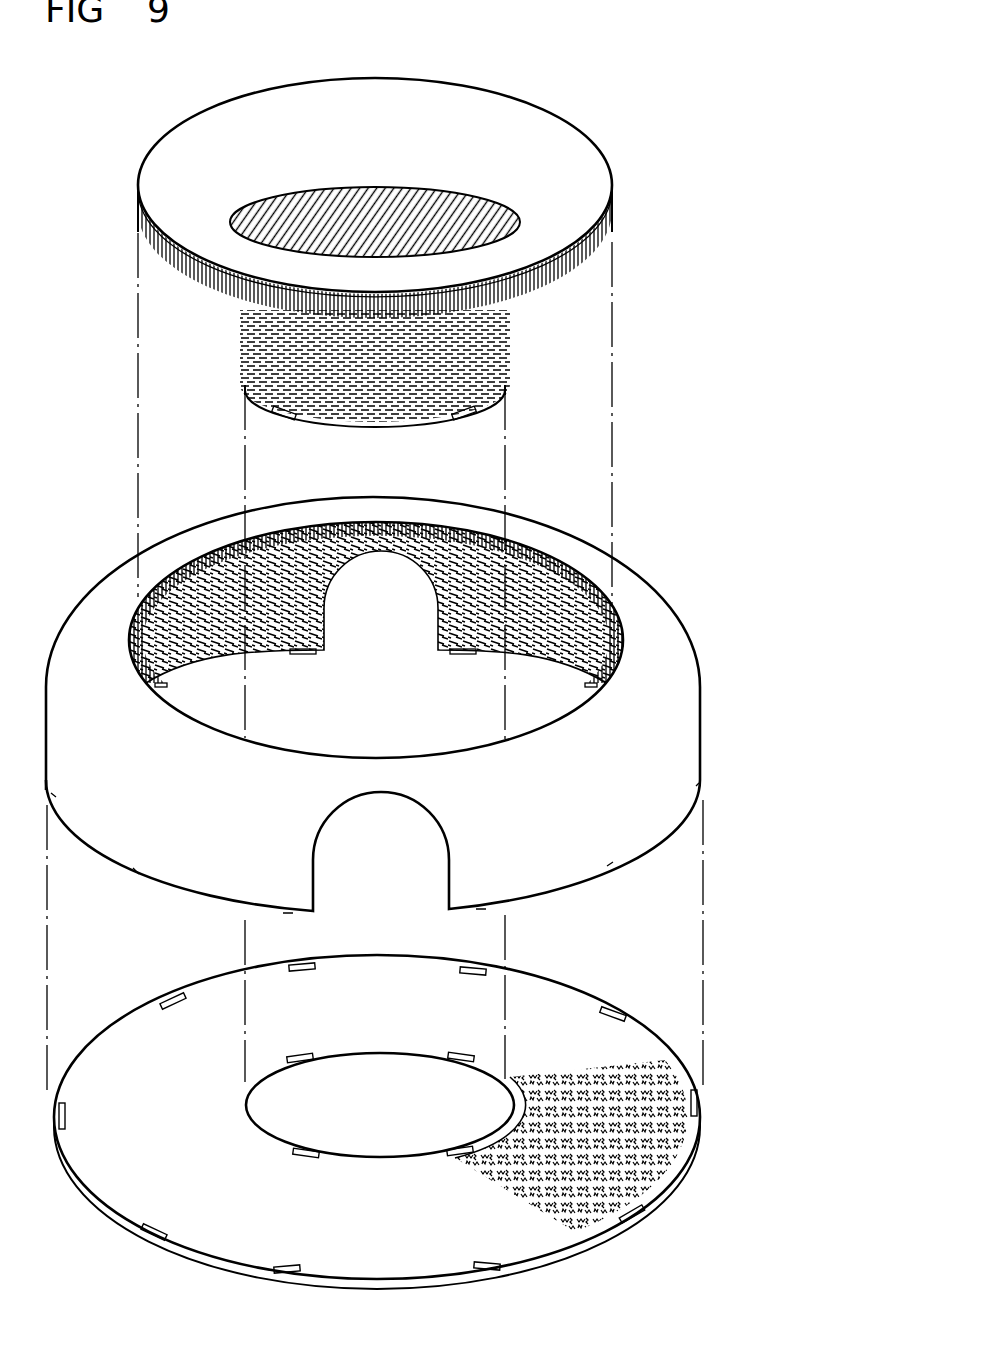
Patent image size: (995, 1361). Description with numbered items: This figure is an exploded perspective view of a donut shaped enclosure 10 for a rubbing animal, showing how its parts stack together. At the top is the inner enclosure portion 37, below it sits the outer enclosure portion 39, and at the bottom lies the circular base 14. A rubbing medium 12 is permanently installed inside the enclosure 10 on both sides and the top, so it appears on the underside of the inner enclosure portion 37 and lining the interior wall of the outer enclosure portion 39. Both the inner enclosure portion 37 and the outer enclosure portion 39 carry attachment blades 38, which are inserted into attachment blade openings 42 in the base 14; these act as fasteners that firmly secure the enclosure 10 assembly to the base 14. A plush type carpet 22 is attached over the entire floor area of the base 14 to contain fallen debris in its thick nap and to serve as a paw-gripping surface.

The enclosure 10 is at (568, 47).
The inner enclosure portion 37 is at (552, 119).
The rubbing medium 12 is at (499, 346).
The attachment blades 38 is at (473, 416).
The outer enclosure portion 39 is at (700, 688).
The attachment blade openings 42 is at (304, 1155).
The carpet 22 is at (539, 1177).
The circular base 14 is at (560, 1258).